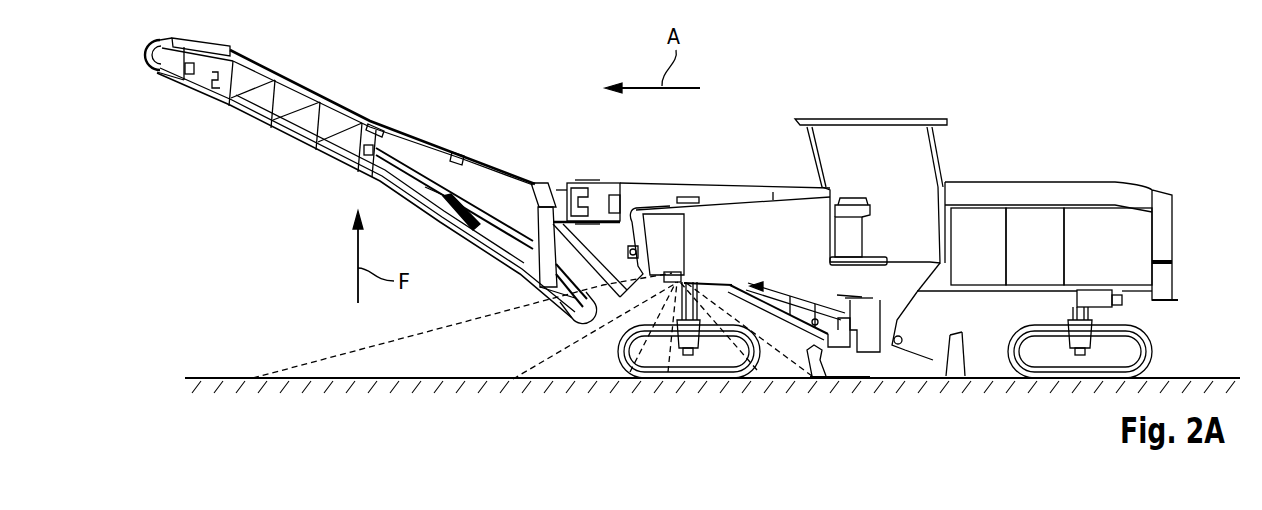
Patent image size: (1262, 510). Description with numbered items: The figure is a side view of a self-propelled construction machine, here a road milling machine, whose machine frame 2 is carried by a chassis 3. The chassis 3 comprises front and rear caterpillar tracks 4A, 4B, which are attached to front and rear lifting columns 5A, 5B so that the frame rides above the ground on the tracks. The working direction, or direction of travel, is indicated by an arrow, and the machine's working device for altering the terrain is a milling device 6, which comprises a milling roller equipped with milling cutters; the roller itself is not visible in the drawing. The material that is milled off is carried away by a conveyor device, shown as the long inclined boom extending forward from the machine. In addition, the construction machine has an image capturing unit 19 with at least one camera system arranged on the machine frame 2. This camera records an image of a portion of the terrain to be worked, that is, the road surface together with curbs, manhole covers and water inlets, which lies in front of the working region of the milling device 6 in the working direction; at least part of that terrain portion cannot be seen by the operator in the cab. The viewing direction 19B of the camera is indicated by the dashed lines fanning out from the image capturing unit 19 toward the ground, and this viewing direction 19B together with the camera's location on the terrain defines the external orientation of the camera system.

The machine frame 2 is at (1166, 312).
The chassis 3 is at (714, 295).
The front caterpillar tracks 4A is at (621, 348).
The rear caterpillar tracks 4B is at (1153, 351).
The front lifting columns 5A is at (698, 310).
The rear lifting columns 5B is at (1073, 314).
The milling device 6 is at (874, 358).
The image capturing unit 19 is at (673, 272).
The viewing direction 19B is at (487, 360).